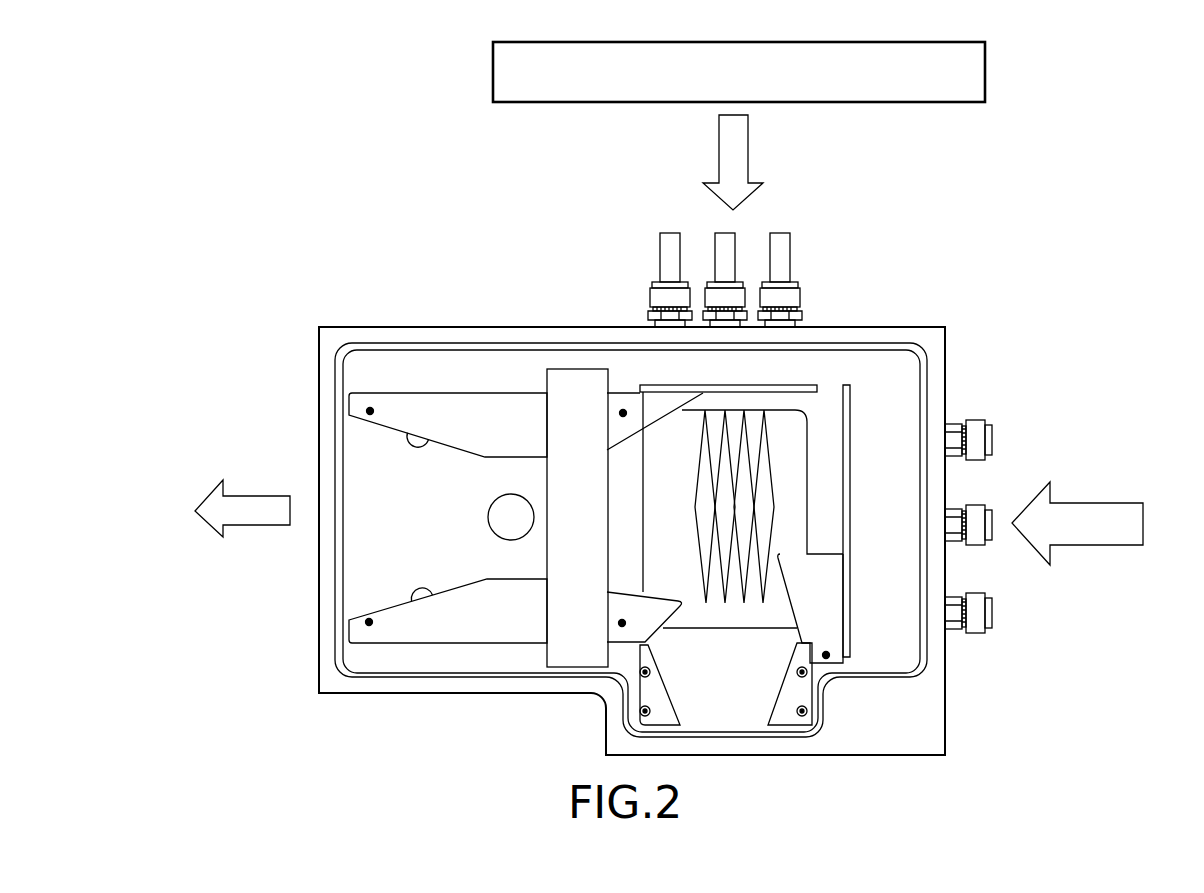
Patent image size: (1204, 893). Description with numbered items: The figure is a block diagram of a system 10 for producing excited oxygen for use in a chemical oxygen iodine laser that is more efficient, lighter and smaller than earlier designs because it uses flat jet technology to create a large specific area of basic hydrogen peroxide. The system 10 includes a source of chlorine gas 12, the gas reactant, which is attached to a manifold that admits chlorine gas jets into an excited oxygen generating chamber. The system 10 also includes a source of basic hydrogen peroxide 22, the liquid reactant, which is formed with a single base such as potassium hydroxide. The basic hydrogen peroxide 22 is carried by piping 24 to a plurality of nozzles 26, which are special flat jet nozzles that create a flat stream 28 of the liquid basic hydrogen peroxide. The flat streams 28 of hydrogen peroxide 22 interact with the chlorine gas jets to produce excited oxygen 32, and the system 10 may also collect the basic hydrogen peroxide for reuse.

The system for producing excited oxygen 10 is at (750, 23).
The source of chlorine gas 12 is at (1085, 508).
The source of basic hydrogen peroxide 22 is at (985, 70).
The piping 24 is at (826, 352).
The nozzles 26 is at (797, 388).
The flat stream 28 is at (705, 590).
The excited oxygen 32 is at (207, 526).